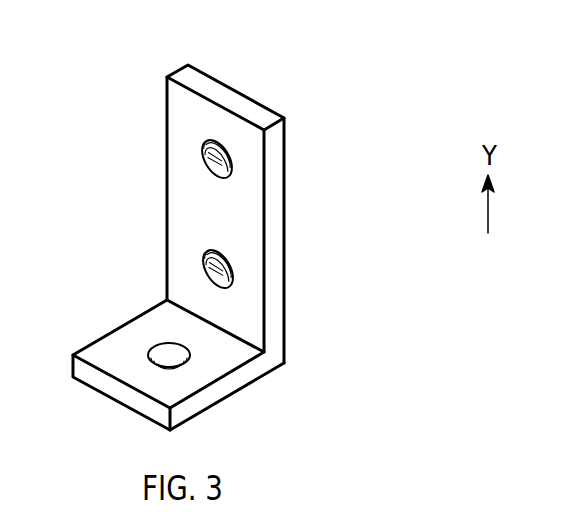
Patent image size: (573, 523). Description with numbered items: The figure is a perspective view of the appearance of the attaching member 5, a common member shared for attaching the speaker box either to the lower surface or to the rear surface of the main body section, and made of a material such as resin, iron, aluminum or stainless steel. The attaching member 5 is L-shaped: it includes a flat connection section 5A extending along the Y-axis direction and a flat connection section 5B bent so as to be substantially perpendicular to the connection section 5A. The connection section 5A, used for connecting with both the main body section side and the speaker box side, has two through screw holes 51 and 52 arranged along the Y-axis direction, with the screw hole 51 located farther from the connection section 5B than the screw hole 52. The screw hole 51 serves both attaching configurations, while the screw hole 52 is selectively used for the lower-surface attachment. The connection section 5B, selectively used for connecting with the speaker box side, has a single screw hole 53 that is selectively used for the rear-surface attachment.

The attaching member 5 is at (295, 57).
The connection section 5A is at (240, 224).
The connection section 5B is at (227, 360).
The screw hole 51 is at (203, 145).
The screw hole 52 is at (203, 258).
The screw hole 53 is at (167, 347).